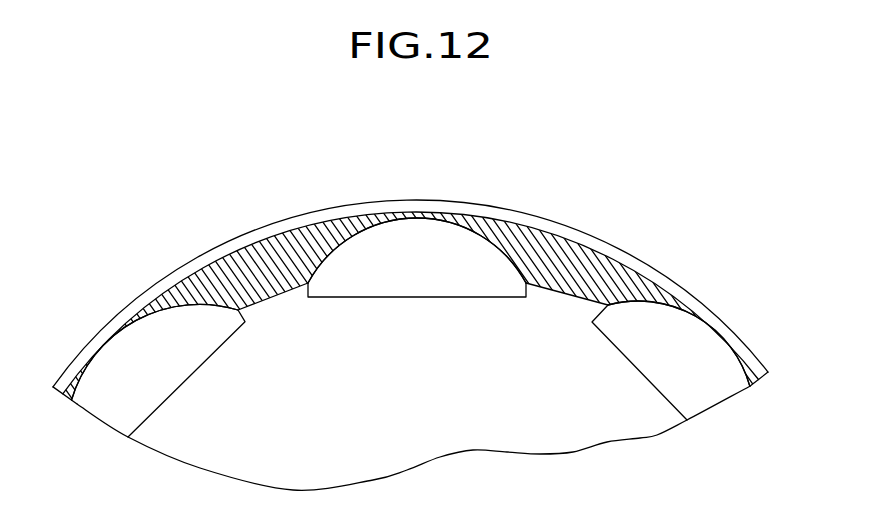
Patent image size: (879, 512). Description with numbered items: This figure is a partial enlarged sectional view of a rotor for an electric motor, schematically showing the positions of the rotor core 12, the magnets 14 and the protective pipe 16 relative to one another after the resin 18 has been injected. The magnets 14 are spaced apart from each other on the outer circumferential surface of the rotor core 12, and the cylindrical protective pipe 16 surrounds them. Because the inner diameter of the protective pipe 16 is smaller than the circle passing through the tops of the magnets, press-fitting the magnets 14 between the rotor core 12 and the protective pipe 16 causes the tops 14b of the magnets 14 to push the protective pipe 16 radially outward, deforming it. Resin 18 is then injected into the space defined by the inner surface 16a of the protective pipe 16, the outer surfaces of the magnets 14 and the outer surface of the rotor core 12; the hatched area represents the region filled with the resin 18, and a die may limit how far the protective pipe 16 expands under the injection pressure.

The rotor core 12 is at (630, 425).
The magnets 14 is at (463, 233).
The tops of the magnets 14b is at (417, 215).
The protective pipe 16 is at (253, 228).
The inner surface of the protective pipe 16a is at (306, 227).
The resin 18 is at (587, 265).